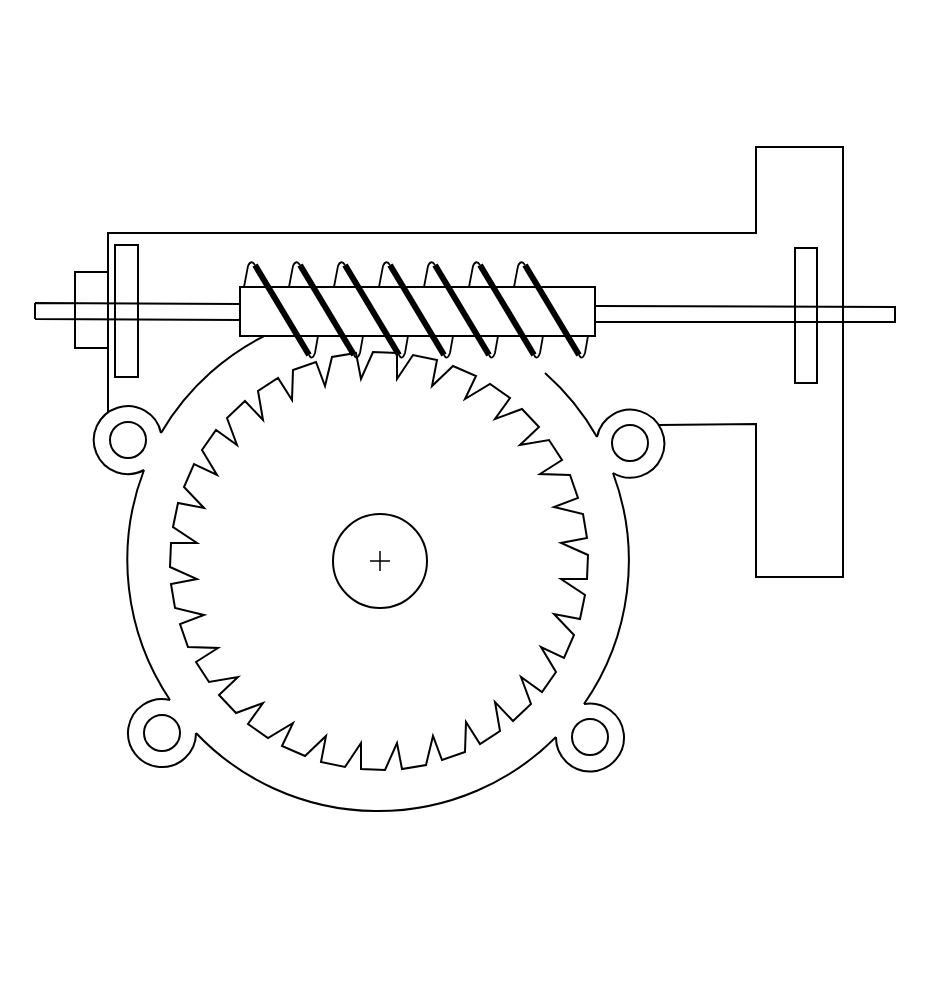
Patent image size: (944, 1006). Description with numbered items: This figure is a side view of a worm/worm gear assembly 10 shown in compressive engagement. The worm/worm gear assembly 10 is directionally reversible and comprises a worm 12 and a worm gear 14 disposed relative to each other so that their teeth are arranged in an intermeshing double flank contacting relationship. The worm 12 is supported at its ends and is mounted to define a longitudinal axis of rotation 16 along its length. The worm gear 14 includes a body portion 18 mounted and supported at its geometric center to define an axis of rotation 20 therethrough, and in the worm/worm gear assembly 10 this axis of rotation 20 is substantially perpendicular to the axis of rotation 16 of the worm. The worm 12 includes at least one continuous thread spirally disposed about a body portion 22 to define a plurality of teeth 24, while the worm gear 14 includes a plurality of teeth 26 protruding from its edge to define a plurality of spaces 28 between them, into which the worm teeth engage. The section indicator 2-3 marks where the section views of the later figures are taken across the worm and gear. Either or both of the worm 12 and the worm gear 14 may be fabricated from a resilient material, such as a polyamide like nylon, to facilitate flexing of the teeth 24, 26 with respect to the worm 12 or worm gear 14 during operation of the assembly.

The worm/worm gear assembly 10 is at (574, 118).
The worm 12 is at (611, 300).
The worm gear 14 is at (386, 693).
The longitudinal axis of rotation 16 is at (873, 305).
The body portion 18 is at (473, 706).
The axis of rotation 20 is at (376, 565).
The body portion 22 is at (272, 297).
The teeth 24 is at (293, 255).
The teeth 26 is at (166, 513).
The spaces 28 is at (180, 500).
The section line 2-3 is at (255, 342).